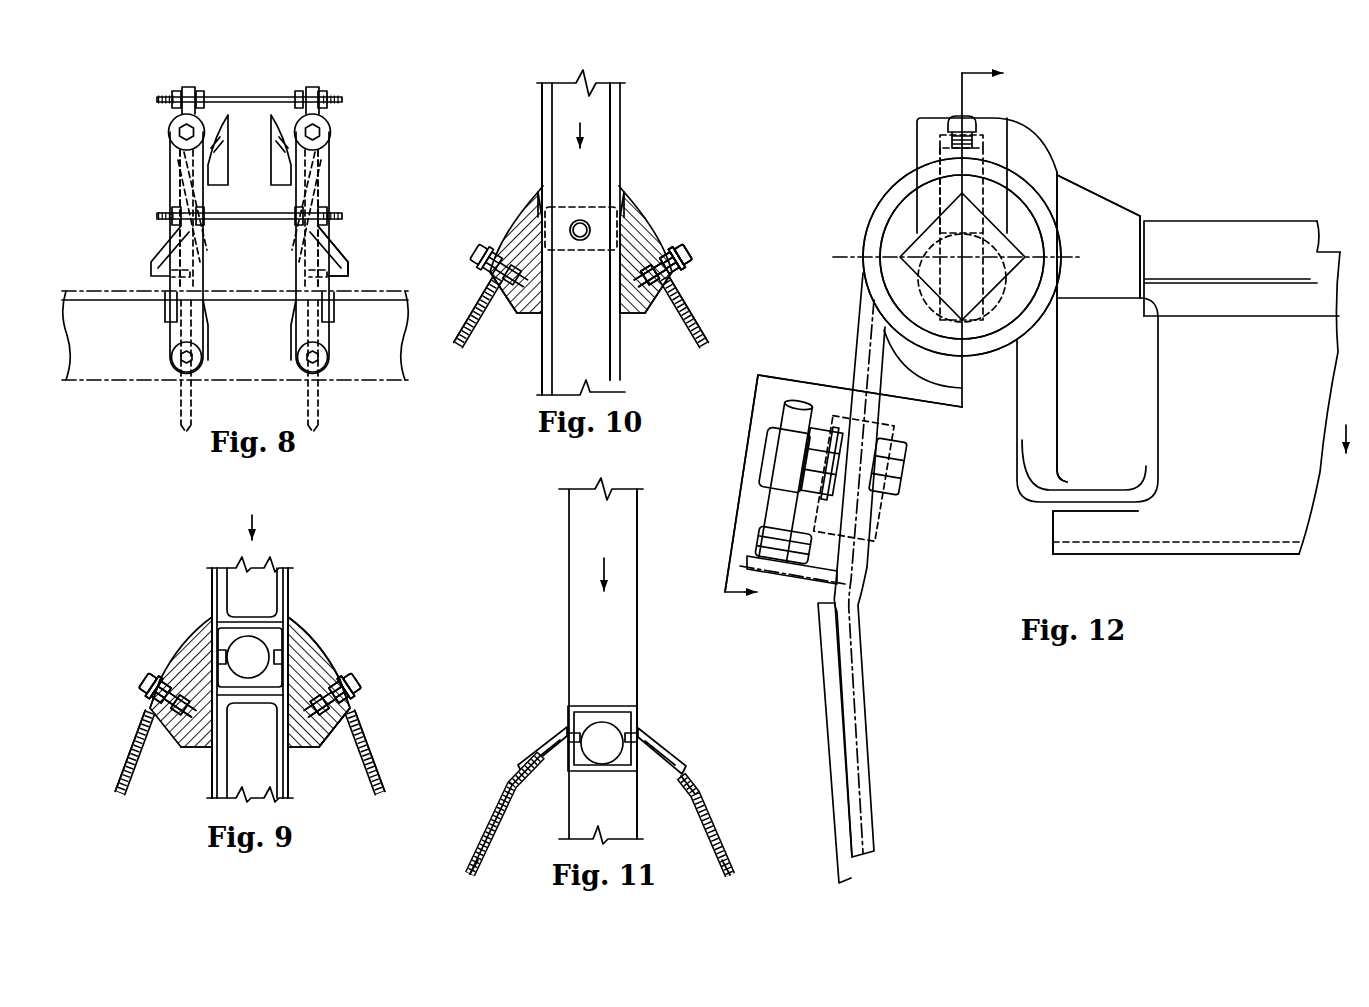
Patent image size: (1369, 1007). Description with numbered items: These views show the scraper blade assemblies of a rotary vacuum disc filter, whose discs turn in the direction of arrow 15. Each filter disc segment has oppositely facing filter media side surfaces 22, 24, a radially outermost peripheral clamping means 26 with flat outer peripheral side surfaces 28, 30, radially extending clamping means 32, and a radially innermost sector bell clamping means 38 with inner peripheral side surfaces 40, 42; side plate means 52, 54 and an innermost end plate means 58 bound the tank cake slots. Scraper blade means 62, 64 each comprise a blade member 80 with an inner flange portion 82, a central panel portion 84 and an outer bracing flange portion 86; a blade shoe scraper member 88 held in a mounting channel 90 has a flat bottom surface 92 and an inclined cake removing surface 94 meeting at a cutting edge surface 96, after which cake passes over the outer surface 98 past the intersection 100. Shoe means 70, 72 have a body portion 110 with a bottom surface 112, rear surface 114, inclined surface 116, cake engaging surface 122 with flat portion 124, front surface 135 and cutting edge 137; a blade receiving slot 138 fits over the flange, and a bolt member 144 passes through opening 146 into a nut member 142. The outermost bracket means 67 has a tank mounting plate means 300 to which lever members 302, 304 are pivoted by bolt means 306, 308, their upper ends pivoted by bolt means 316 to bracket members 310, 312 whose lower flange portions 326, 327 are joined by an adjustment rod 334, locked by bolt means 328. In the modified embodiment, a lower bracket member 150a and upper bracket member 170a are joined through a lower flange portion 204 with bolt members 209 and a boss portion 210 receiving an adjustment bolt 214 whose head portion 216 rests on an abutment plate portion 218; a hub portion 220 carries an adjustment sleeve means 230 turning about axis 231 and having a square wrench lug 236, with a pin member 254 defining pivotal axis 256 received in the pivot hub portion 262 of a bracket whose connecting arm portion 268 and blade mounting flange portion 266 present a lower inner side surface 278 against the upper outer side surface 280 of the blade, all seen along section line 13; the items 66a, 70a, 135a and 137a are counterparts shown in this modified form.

In FIG. 12, the section line 13- 13 is at (882, 336).
In FIG. 10, the direction of rotation arrow 15 is at (593, 123).
In FIG. 9, the direction of rotation arrow 15 is at (254, 527).
In FIG. 11, the direction of rotation arrow 15 is at (608, 576).
In FIG. 12, the direction of rotation arrow 15 is at (1349, 428).
In FIG. 11, the filter media side surface 22 is at (568, 542).
In FIG. 11, the filter media side surface 24 is at (638, 656).
In FIG. 10, the outermost peripheral clamping means 26 is at (626, 134).
In FIG. 10, the outer peripheral side surface 28 is at (541, 129).
In FIG. 10, the outer peripheral side surface 30 is at (620, 160).
In FIG. 11, the radially extending clamping means 32 is at (641, 706).
In FIG. 9, the sector bell connecting and filter material clamping means 38 is at (291, 566).
In FIG. 9, the inner peripheral side surface 40 is at (289, 594).
In FIG. 9, the inner peripheral side surface 42 is at (211, 594).
In FIG. 8, the side plate means 52 is at (178, 408).
In FIG. 8, the side plate means 54 is at (322, 410).
In FIG. 12, the radially innermost end plate means 58 is at (870, 866).
In FIG. 8, the scraper blade means 62 is at (146, 271).
In FIG. 10, the scraper blade means 62 is at (460, 351).
In FIG. 9, the scraper blade means 62 is at (374, 786).
In FIG. 11, the scraper blade means 62 is at (469, 878).
In FIG. 12, the scraper blade means 62 is at (1301, 556).
In FIG. 8, the scraper blade means 64 is at (357, 262).
In FIG. 10, the scraper blade means 64 is at (706, 352).
In FIG. 9, the scraper blade means 64 is at (131, 783).
In FIG. 11, the scraper blade means 64 is at (733, 878).
In FIG. 12, the clamp assembly 66a is at (857, 223).
In FIG. 8, the radially outermost mounting bracket assembly means 67 is at (160, 130).
In FIG. 9, the cake scraping and blade supporting shoe means 70 is at (187, 752).
In FIG. 12, the wedge 70a is at (1101, 212).
In FIG. 8, the cake scraping and blade supporting shoe means 72 is at (265, 172).
In FIG. 10, the cake scraping and blade supporting shoe means 72 is at (518, 320).
In FIG. 11, the blade member 80 is at (481, 866).
In FIG. 10, the inner scraper shoe mounting flange portion 82 is at (652, 240).
In FIG. 9, the inner scraper shoe mounting flange portion 82 is at (176, 670).
In FIG. 11, the inner scraper shoe mounting flange portion 82 is at (512, 778).
In FIG. 12, the inner scraper shoe mounting flange portion 82 is at (1330, 262).
In FIG. 8, the central panel portion 84 is at (330, 265).
In FIG. 10, the central panel portion 84 is at (694, 322).
In FIG. 9, the central panel portion 84 is at (143, 741).
In FIG. 11, the central panel portion 84 is at (489, 826).
In FIG. 12, the central panel portion 84 is at (1306, 352).
In FIG. 8, the outer bracing flange portion 86 is at (352, 283).
In FIG. 12, the outer bracing flange portion 86 is at (1181, 542).
In FIG. 11, the blade shoe scraper member 88 is at (560, 732).
In FIG. 12, the blade shoe scraper member 88 is at (1255, 236).
In FIG. 11, the mounting channel 90 is at (686, 782).
In FIG. 11, the flat bottom surface 92 is at (597, 728).
In FIG. 11, the inclined outer cake removing surface 94 is at (661, 745).
In FIG. 11, the cake cutting edge surface 96 is at (566, 722).
In FIG. 11, the outer surface 98 is at (722, 840).
In FIG. 11, the intersection of flange portion and panel portion 100 is at (701, 795).
In FIG. 10, the body portion 110 is at (548, 280).
In FIG. 9, the body portion 110 is at (284, 703).
In FIG. 10, the bottom surface 112 is at (610, 250).
In FIG. 9, the bottom surface 112 is at (288, 738).
In FIG. 10, the rear surface 114 is at (535, 318).
In FIG. 9, the rear surface 114 is at (317, 750).
In FIG. 10, the inclined axially and downwardly facing surface 116 is at (665, 313).
In FIG. 9, the inclined axially and downwardly facing surface 116 is at (327, 742).
In FIG. 10, the cake engaging surface 122 is at (524, 213).
In FIG. 9, the cake engaging surface 122 is at (303, 648).
In FIG. 9, the axially outermost flat portion 124 is at (326, 672).
In FIG. 9, the front surface 135 is at (293, 620).
In FIG. 12, the flange 135a is at (1137, 207).
In FIG. 10, the cake cutting edge surface 137 is at (537, 190).
In FIG. 12, the flange 137a is at (1062, 178).
In FIG. 10, the blade receiving slot 138 is at (640, 216).
In FIG. 9, the blade receiving slot 138 is at (191, 652).
In FIG. 10, the threaded nut member 142 is at (493, 300).
In FIG. 9, the threaded nut member 142 is at (157, 722).
In FIG. 10, the bolt member 144 is at (692, 250).
In FIG. 9, the bolt member 144 is at (146, 680).
In FIG. 10, the opening 146 is at (681, 276).
In FIG. 9, the opening 146 is at (353, 706).
In FIG. 12, the lower bracket member 150a is at (874, 605).
In FIG. 12, the upper bracket member 170a is at (900, 366).
In FIG. 12, the lower flange portion 204 is at (850, 405).
In FIG. 12, the bolt members 209 is at (904, 480).
In FIG. 12, the boss portion 210 is at (763, 458).
In FIG. 12, the threaded adjustment bolt 214 is at (772, 512).
In FIG. 12, the head portion 216 is at (812, 549).
In FIG. 12, the abutment plate portion 218 is at (820, 590).
In FIG. 12, the hub portion 220 is at (992, 340).
In FIG. 12, the adjustment sleeve means 230 is at (1027, 287).
In FIG. 12, the central axis of rotation 231 is at (1053, 242).
In FIG. 12, the square wrench lug portion 236 is at (863, 272).
In FIG. 12, the transverse mounting pin member 254 is at (984, 155).
In FIG. 12, the pivotal axis 256 is at (945, 177).
In FIG. 12, the pivot hub portion 262 is at (942, 116).
In FIG. 12, the blade mounting flange portion 266 is at (1136, 418).
In FIG. 12, the connecting arm portion 268 is at (1037, 384).
In FIG. 12, the lower inner side surface 278 is at (1076, 513).
In FIG. 12, the upper outer side surface 280 is at (1151, 516).
In FIG. 8, the tank mounting plate means 300 is at (150, 382).
In FIG. 8, the lever member 302 is at (168, 192).
In FIG. 8, the lever member 304 is at (332, 186).
In FIG. 8, the bolt means 306 is at (178, 360).
In FIG. 8, the bolt means 308 is at (322, 360).
In FIG. 8, the blade attachment bracket member 310 is at (168, 164).
In FIG. 8, the blade attachment bracket member 312 is at (332, 156).
In FIG. 8, the bolt means 316 is at (318, 131).
In FIG. 8, the lower connecting flange portion 326 is at (205, 256).
In FIG. 8, the lower connecting flange portion 327 is at (292, 258).
In FIG. 8, the bolt means 328 is at (300, 104).
In FIG. 8, the lower threaded adjustment rod 334 is at (228, 220).